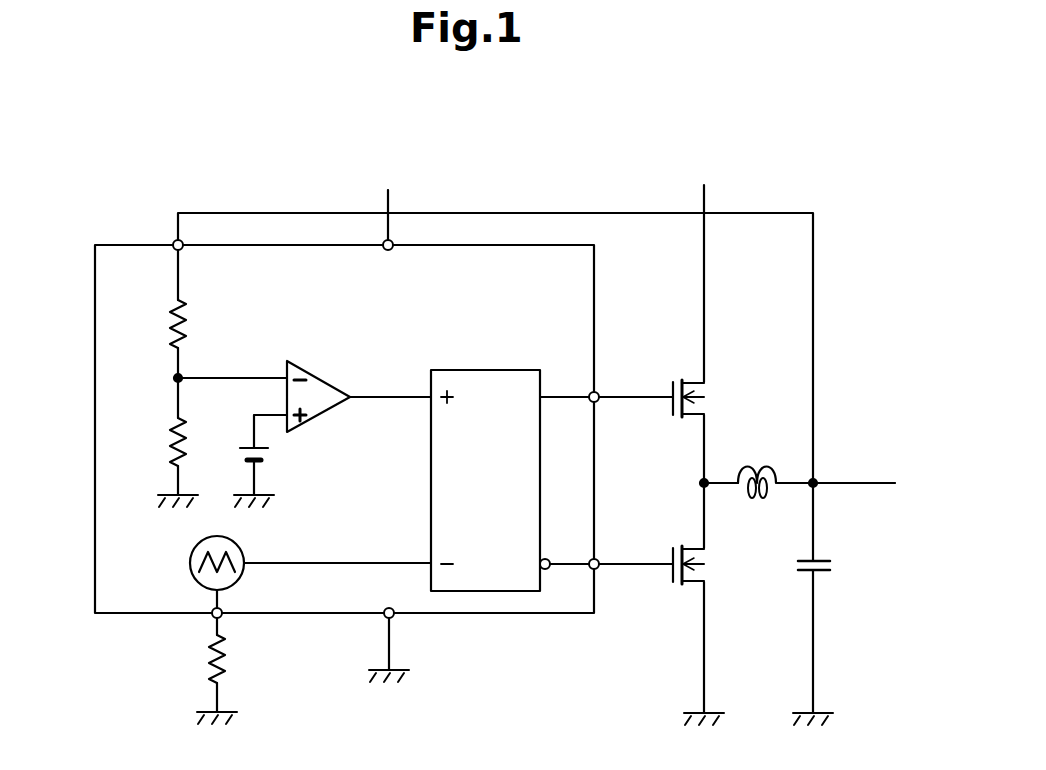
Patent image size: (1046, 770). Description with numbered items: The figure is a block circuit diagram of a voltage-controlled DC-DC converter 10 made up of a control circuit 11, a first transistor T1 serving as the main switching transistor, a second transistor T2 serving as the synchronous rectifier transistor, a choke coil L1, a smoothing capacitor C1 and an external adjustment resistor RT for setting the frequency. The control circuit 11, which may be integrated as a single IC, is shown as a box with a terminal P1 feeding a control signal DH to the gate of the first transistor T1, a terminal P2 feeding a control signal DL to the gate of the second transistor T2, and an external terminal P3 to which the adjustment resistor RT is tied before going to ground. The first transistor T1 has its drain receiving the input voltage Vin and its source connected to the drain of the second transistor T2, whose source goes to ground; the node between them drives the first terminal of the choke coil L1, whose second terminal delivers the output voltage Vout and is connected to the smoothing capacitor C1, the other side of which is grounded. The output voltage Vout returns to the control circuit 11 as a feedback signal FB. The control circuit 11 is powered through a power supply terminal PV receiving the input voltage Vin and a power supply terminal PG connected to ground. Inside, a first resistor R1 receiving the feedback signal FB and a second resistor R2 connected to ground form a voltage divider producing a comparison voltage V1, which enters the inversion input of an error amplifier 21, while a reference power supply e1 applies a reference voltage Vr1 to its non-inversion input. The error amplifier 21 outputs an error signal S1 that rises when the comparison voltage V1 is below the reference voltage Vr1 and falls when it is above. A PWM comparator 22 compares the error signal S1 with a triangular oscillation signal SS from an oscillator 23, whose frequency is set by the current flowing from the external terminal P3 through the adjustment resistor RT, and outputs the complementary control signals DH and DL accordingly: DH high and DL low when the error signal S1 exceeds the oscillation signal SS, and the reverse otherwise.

The DC-DC converter 10 is at (797, 183).
The control circuit 11 is at (597, 266).
The error amplifier 21 is at (323, 372).
The PWM comparator 22 is at (518, 370).
The oscillator 23 is at (235, 540).
The first resistor R1 is at (188, 318).
The second resistor R2 is at (168, 444).
The adjustment resistor RT is at (226, 664).
The reference power supply e1 is at (262, 452).
The first transistor T1 is at (695, 390).
The second transistor T2 is at (695, 556).
The choke coil L1 is at (762, 468).
The smoothing capacitor C1 is at (826, 574).
The feedback signal FB is at (190, 218).
The power supply terminal PV is at (394, 241).
The power supply terminal PG is at (393, 620).
The terminal P1 is at (596, 392).
The terminal P2 is at (597, 570).
The external terminal P3 is at (210, 618).
The input voltage Vin is at (537, 185).
The output voltage Vout is at (854, 469).
The comparison voltage V1 is at (232, 364).
The reference voltage Vr1 is at (257, 403).
The error signal S1 is at (390, 384).
The oscillation signal SS is at (337, 550).
The control signal DH is at (636, 384).
The control signal DL is at (636, 551).